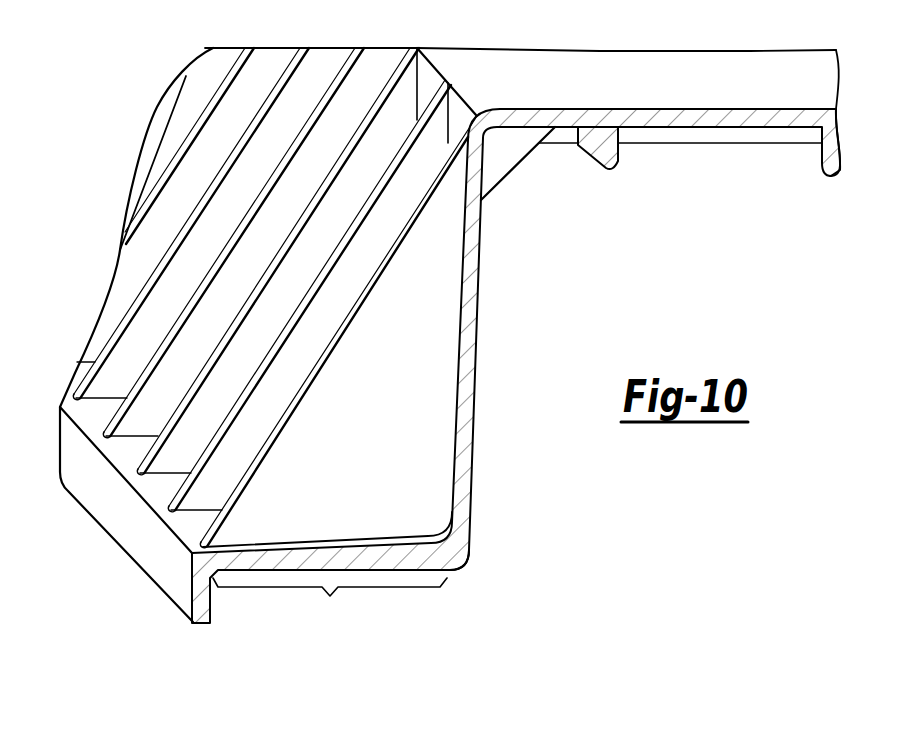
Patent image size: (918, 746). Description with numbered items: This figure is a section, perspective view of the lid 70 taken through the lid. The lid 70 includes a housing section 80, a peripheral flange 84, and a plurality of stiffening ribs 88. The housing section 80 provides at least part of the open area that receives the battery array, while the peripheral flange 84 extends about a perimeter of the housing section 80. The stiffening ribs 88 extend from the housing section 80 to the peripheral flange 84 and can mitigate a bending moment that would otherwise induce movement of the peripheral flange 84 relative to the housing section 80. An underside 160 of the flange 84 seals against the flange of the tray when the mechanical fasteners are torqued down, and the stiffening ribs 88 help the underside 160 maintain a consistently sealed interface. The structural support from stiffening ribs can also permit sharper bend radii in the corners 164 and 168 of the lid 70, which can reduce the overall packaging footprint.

The lid 70 is at (722, 110).
The housing section 80 is at (539, 118).
The peripheral flange 84 is at (297, 557).
The stiffening ribs 88 is at (209, 283).
The underside 160 is at (330, 602).
The corner 164 is at (475, 558).
The corner 168 is at (487, 108).